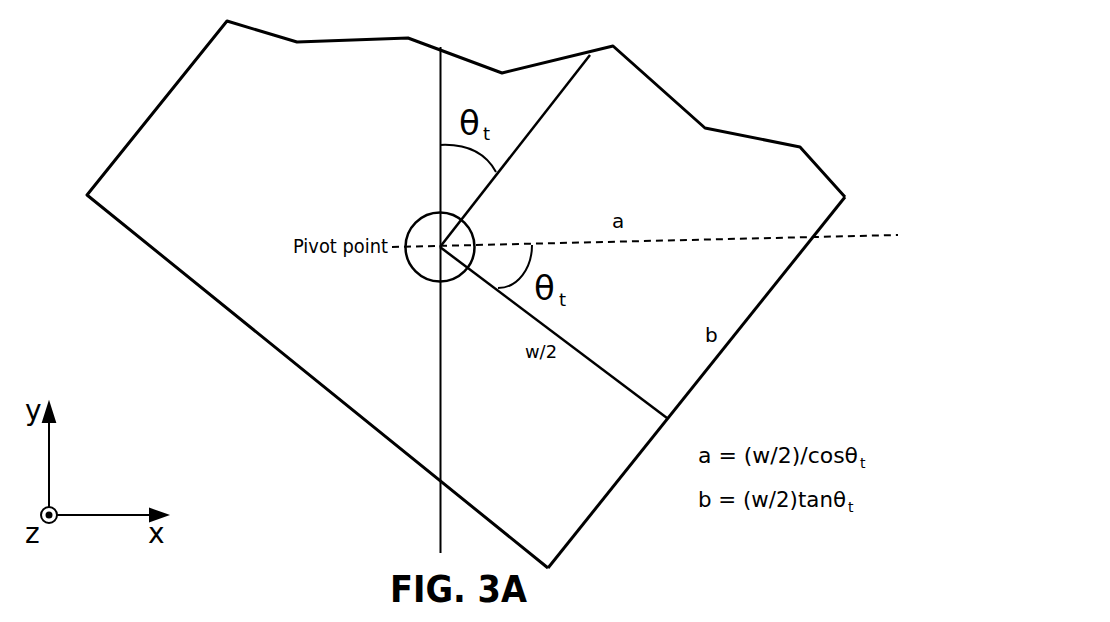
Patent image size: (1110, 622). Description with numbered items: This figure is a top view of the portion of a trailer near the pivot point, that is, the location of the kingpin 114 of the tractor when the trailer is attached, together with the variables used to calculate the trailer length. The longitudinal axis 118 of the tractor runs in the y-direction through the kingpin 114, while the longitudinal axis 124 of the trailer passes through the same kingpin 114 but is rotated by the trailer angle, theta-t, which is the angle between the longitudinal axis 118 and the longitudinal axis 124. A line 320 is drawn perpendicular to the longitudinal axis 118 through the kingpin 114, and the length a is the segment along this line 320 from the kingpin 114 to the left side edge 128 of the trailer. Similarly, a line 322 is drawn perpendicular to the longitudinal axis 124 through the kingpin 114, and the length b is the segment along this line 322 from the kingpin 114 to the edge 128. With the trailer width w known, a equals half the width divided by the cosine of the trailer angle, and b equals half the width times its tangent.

The kingpin 114 is at (407, 265).
The longitudinal axis of the tractor 118 is at (440, 112).
The longitudinal axis of the trailer 124 is at (545, 113).
The left side edge of the trailer 128 is at (635, 456).
The line perpendicular to the tractor longitudinal axis 320 is at (863, 235).
The line perpendicular to the trailer longitudinal axis 322 is at (592, 362).